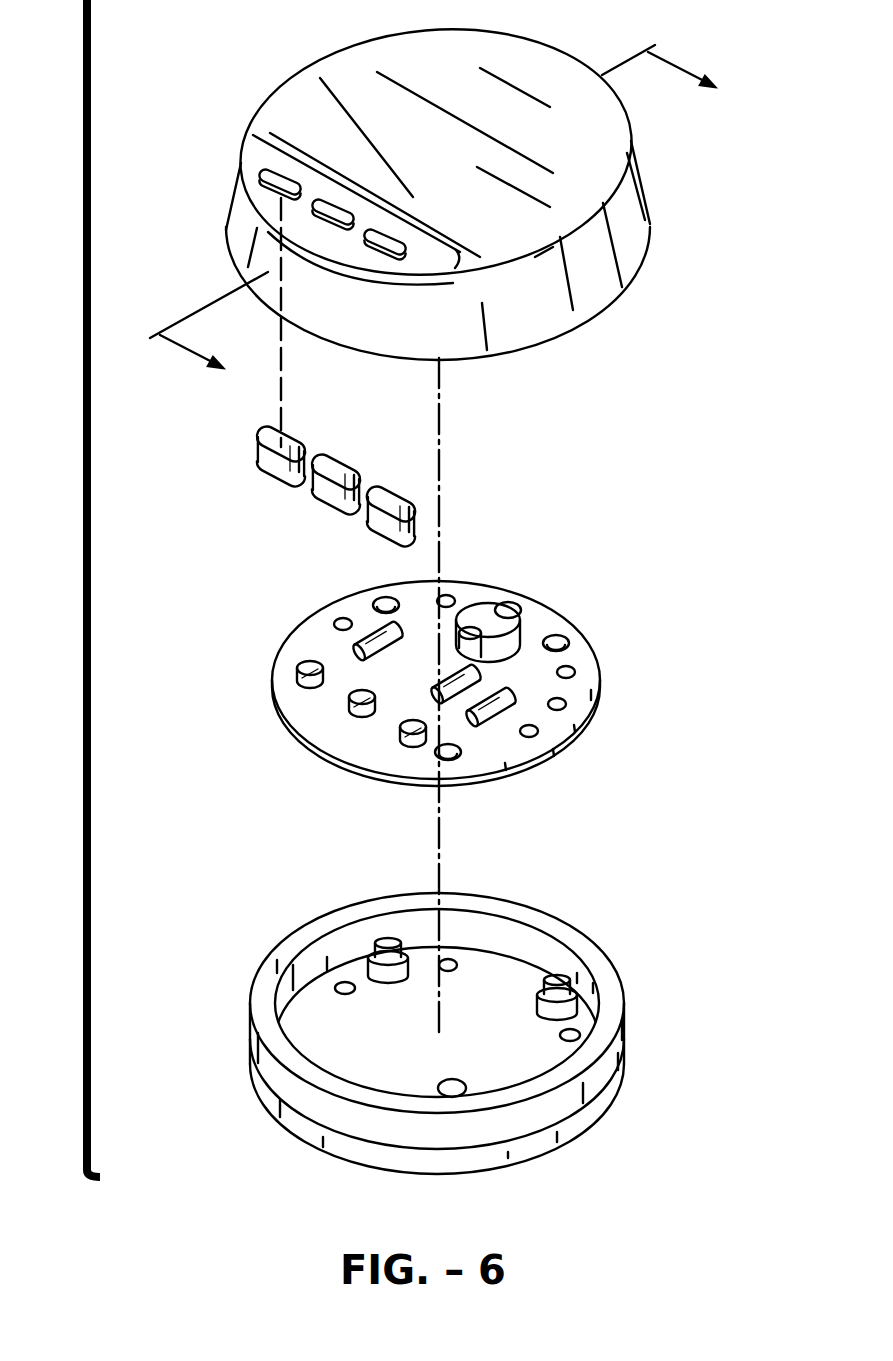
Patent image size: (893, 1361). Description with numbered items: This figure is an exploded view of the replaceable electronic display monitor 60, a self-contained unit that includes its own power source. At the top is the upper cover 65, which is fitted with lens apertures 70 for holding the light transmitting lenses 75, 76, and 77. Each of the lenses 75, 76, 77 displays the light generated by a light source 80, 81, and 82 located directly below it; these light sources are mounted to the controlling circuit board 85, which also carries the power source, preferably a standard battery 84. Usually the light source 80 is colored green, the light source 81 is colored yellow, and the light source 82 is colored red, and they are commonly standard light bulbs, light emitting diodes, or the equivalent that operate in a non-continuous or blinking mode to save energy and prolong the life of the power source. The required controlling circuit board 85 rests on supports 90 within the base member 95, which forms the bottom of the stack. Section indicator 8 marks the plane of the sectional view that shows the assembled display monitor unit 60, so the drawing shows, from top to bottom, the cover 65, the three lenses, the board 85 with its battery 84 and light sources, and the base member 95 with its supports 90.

The electronic display monitor 60 is at (87, 570).
The upper cover 65 is at (386, 50).
The lens apertures 70 is at (268, 172).
The light transmitting lens 75 is at (272, 470).
The light transmitting lens 76 is at (322, 500).
The light transmitting lens 77 is at (382, 535).
The light source 80 is at (304, 684).
The light source 81 is at (355, 716).
The light source 82 is at (408, 746).
The battery 84 is at (484, 604).
The controlling circuit board 85 is at (318, 631).
The supports 90 is at (386, 940).
The base member 95 is at (275, 1082).
The section line for FIG. 8 is at (446, 220).